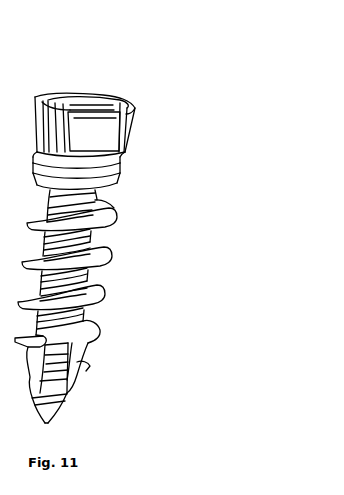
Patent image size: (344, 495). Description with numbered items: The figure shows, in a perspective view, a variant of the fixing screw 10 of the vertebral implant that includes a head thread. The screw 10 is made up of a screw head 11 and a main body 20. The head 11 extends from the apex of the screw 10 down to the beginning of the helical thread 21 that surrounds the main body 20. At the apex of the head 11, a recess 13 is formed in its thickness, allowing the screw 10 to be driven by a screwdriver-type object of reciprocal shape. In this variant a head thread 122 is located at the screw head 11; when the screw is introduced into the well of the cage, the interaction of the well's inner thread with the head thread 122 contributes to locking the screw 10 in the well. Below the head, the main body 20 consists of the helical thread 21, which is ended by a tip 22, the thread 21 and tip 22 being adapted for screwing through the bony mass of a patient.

The screw 10 is at (118, 244).
The screw head 11 is at (128, 106).
The recess 13 is at (82, 103).
The head thread 122 is at (120, 167).
The main body 20 is at (123, 258).
The helical thread 21 is at (82, 367).
The tip 22 is at (92, 380).